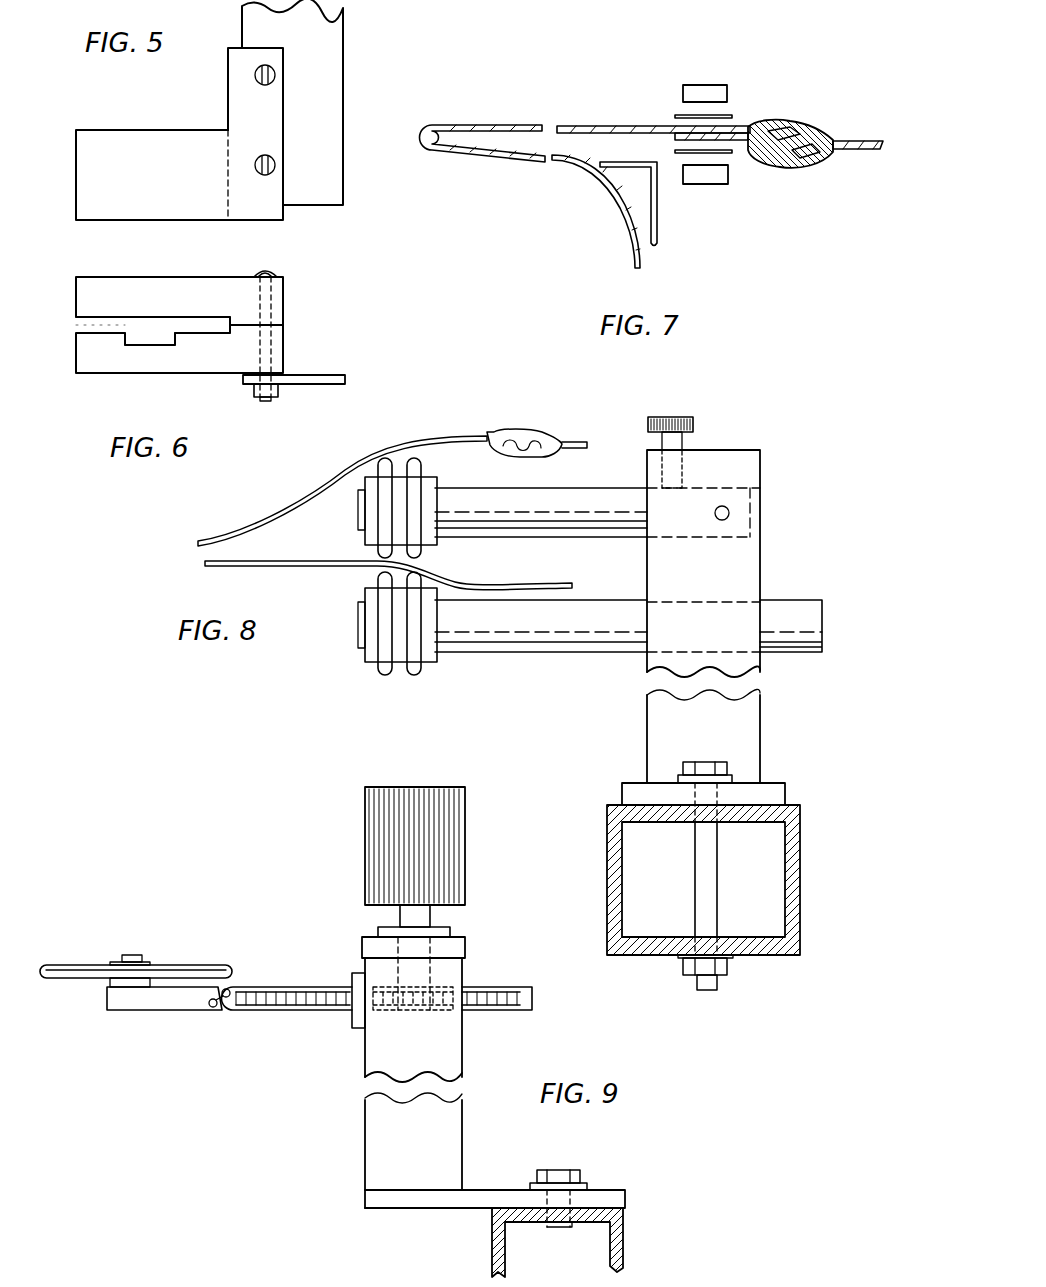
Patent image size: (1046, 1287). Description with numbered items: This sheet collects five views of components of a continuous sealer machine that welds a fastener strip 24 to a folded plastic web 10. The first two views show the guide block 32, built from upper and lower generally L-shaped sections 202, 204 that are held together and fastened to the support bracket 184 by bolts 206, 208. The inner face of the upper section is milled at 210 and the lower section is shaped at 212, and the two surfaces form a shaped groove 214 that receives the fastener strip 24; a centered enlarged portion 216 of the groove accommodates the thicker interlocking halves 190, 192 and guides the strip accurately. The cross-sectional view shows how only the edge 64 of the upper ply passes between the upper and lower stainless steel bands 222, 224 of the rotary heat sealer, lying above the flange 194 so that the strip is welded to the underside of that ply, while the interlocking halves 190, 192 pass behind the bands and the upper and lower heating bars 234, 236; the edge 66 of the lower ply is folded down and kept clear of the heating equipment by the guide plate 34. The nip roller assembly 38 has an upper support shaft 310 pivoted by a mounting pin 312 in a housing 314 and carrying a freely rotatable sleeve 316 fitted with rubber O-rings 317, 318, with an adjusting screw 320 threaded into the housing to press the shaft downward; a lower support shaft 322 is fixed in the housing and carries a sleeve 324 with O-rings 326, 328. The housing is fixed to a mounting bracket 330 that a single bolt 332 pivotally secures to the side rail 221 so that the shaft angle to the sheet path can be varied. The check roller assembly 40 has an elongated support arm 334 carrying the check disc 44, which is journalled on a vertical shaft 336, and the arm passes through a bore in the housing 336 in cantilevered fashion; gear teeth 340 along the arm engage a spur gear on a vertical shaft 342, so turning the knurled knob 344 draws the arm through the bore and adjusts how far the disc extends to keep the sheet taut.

In FIG. 7, the web 10 is at (482, 124).
In FIG. 7, the fastener strip 24 is at (792, 119).
In FIG. 5, the guide block 32 is at (156, 134).
In FIG. 6, the guide block 32 is at (221, 326).
In FIG. 7, the guide plate 34 is at (656, 234).
In FIG. 8, the nip roller assembly 38 is at (736, 593).
In FIG. 9, the check roller assembly 40 is at (322, 874).
In FIG. 9, the check disc 44 is at (200, 967).
In FIG. 7, the longitudinal edge of upper ply 64 is at (664, 132).
In FIG. 8, the longitudinal edge of upper ply 64 is at (437, 434).
In FIG. 7, the longitudinal edge of lower ply 66 is at (620, 227).
In FIG. 8, the longitudinal edge of lower ply 66 is at (507, 583).
In FIG. 5, the support bracket 184 is at (326, 95).
In FIG. 6, the support bracket 184 is at (321, 380).
In FIG. 7, the interlocking fastener half 190 is at (808, 126).
In FIG. 7, the interlocking fastener half 192 is at (808, 162).
In FIG. 7, the flange 194 is at (743, 127).
In FIG. 5, the upper section 202 is at (95, 168).
In FIG. 6, the upper section 202 is at (199, 283).
In FIG. 6, the lower section 204 is at (187, 372).
In FIG. 5, the bolt 206 is at (276, 73).
In FIG. 5, the bolt 208 is at (276, 165).
In FIG. 6, the bolt 208 is at (279, 273).
In FIG. 6, the milled surface 210 is at (162, 317).
In FIG. 6, the milled surface 212 is at (193, 334).
In FIG. 6, the shaped groove 214 is at (88, 329).
In FIG. 6, the enlarged portion 216 is at (132, 340).
In FIG. 8, the side rail 221 is at (800, 833).
In FIG. 9, the side rail 221 is at (628, 1240).
In FIG. 7, the upper band 222 is at (673, 114).
In FIG. 7, the lower band 224 is at (727, 155).
In FIG. 7, the upper heating bar 234 is at (703, 95).
In FIG. 7, the lower heating bar 236 is at (700, 175).
In FIG. 8, the upper support shaft 310 is at (586, 504).
In FIG. 8, the mounting pin 312 is at (729, 515).
In FIG. 8, the housing 314 is at (753, 486).
In FIG. 8, the sleeve 316 is at (437, 538).
In FIG. 8, the rubber O-ring 317 is at (383, 462).
In FIG. 8, the rubber O-ring 318 is at (418, 467).
In FIG. 8, the adjusting screw 320 is at (696, 425).
In FIG. 8, the lower support shaft 322 is at (590, 641).
In FIG. 8, the sleeve 324 is at (371, 599).
In FIG. 8, the rubber O-ring 326 is at (383, 660).
In FIG. 8, the rubber O-ring 328 is at (421, 662).
In FIG. 8, the mounting bracket 330 is at (785, 794).
In FIG. 8, the bolt 332 is at (716, 882).
In FIG. 9, the support arm 334 is at (300, 988).
In FIG. 9, the check roller housing 336 is at (437, 1056).
In FIG. 9, the gear teeth 340 is at (283, 1000).
In FIG. 9, the vertical shaft 342 is at (415, 917).
In FIG. 9, the knurled knob 344 is at (447, 845).